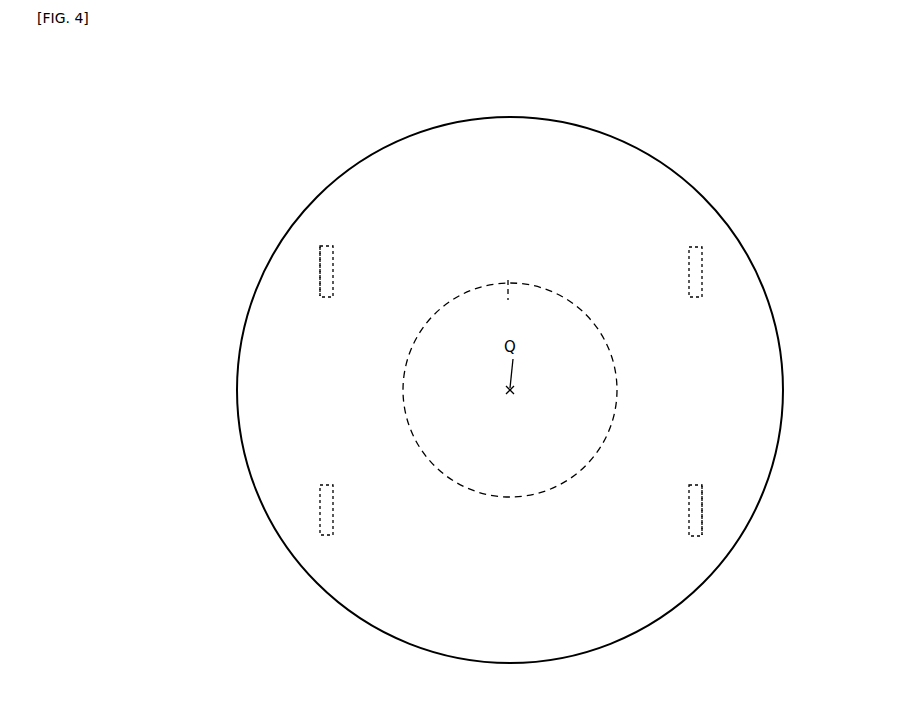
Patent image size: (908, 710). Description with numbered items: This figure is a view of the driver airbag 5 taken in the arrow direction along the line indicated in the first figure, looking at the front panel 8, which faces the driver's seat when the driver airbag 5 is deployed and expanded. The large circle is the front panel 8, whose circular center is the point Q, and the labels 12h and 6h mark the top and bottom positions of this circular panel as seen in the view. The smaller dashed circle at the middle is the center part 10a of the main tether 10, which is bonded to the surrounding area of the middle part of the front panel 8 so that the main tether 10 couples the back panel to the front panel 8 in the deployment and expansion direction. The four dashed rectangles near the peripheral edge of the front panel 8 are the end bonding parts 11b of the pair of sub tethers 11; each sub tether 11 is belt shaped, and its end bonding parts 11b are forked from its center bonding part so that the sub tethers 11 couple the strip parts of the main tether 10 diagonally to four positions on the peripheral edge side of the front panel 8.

The driver airbag 5 is at (481, 366).
The front panel 8 is at (484, 157).
The main tether 10 is at (564, 288).
The center part 10a is at (508, 282).
The sub tethers 11 is at (340, 247).
The end bonding parts 11b is at (320, 258).
The 12 o'clock position 12h is at (510, 97).
The 6 o'clock position 6h is at (508, 687).